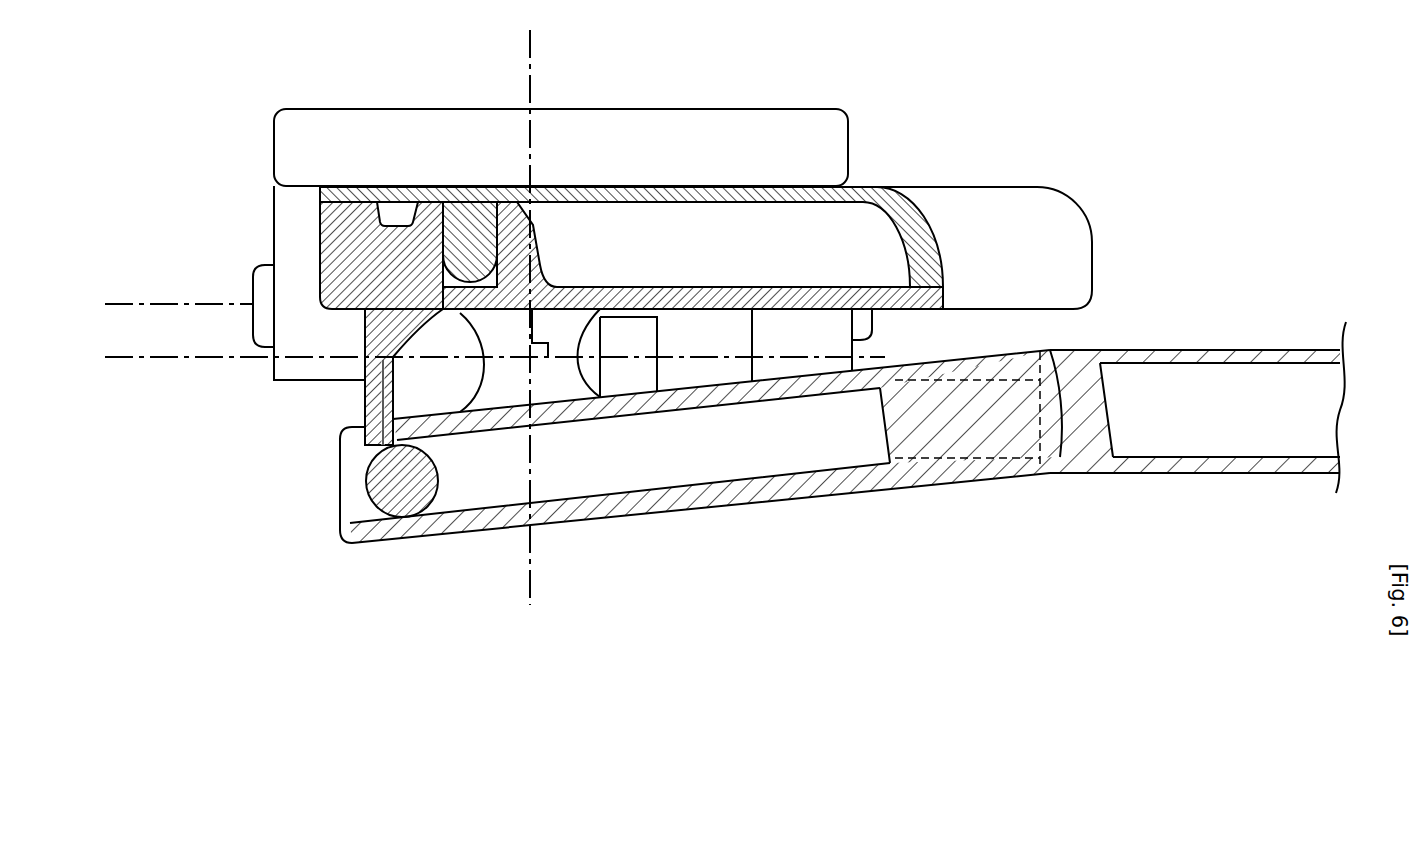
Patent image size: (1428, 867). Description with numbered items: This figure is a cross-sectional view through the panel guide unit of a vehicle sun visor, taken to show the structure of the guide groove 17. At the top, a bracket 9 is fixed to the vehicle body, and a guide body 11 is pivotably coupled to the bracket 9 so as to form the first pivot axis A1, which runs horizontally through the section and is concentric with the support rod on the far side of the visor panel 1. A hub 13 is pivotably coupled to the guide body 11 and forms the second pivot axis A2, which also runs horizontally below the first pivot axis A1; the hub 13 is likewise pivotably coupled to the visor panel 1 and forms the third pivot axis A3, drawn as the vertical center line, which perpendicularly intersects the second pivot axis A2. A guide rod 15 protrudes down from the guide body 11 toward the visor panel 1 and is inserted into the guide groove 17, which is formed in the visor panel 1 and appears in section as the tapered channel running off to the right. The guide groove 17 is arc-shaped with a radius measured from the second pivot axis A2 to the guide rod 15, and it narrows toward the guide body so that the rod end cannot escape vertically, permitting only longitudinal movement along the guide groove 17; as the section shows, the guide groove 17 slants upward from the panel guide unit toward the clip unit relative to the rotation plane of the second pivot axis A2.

The visor panel 1 is at (1203, 463).
The bracket 9 is at (750, 137).
The guide body 11 is at (318, 242).
The hub 13 is at (497, 340).
The guide rod 15 is at (365, 398).
The guide groove 17 is at (773, 452).
The first pivot axis A1 is at (145, 304).
The second pivot axis A2 is at (120, 362).
The third pivot axis A3 is at (532, 57).